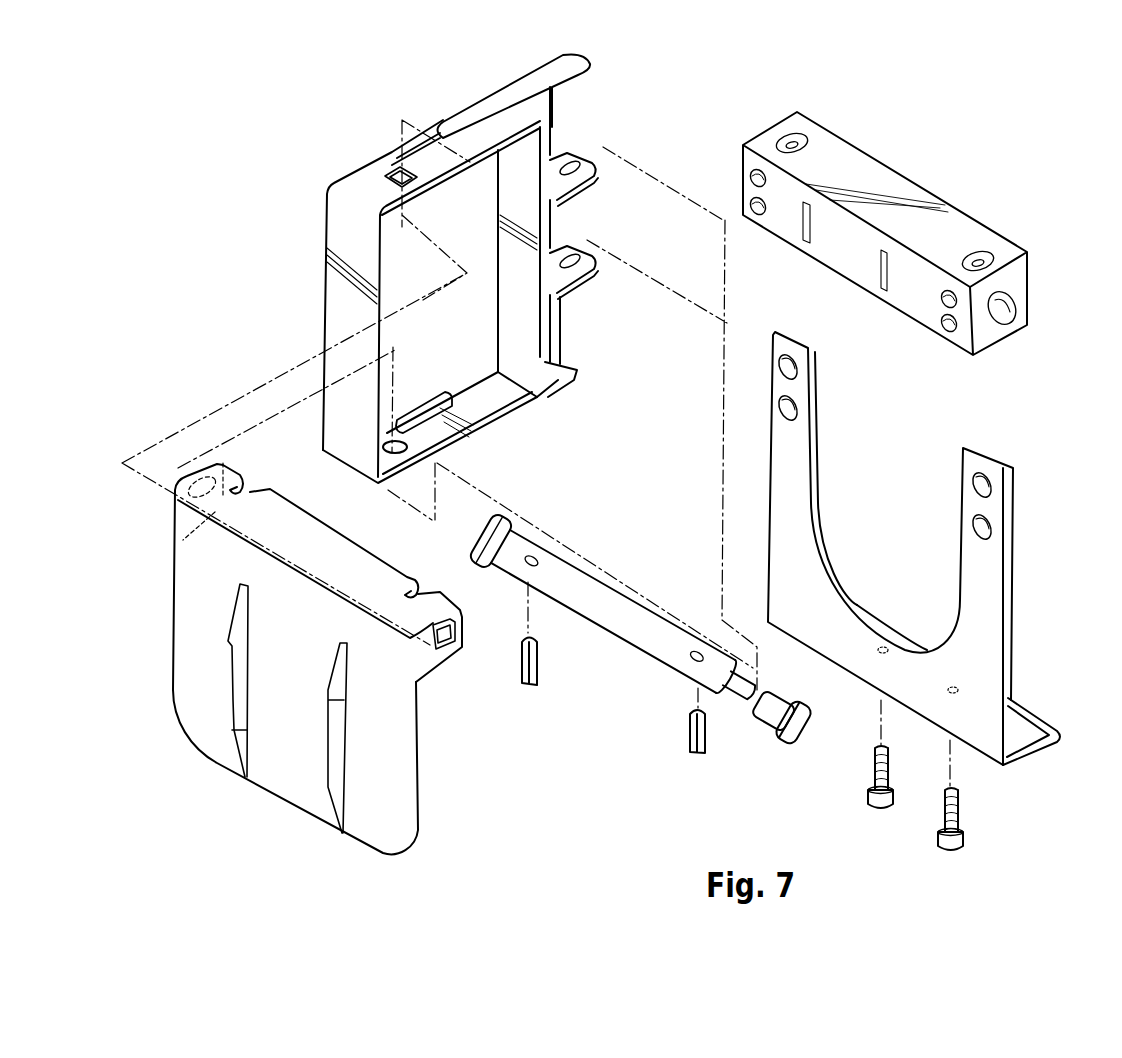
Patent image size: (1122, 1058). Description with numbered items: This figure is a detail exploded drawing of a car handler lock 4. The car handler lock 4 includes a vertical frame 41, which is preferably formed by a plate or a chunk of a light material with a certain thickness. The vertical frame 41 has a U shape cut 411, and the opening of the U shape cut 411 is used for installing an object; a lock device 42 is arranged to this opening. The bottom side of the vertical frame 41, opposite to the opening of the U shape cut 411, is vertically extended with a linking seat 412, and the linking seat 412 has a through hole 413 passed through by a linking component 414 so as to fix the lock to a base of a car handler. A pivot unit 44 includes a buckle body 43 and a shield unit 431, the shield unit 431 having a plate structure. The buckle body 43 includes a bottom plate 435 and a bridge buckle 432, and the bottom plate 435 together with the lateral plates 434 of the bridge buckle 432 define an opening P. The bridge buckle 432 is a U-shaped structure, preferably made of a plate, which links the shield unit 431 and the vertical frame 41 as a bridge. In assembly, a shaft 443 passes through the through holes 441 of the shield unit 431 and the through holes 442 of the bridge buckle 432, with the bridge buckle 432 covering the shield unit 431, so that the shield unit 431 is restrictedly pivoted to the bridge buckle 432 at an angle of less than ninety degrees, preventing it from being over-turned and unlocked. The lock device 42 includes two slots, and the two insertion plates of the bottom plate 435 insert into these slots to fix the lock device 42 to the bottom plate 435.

The car handler lock 4 is at (961, 140).
The vertical frame 41 is at (937, 548).
The U shape cut 411 is at (837, 583).
The linking seat 412 is at (1033, 725).
The through hole 413 is at (968, 688).
The linking component 414 is at (960, 800).
The lock device 42 is at (965, 229).
The buckle body 43 is at (358, 180).
The shield unit 431 is at (420, 767).
The bridge buckle 432 is at (438, 443).
The lateral plates 434 is at (568, 60).
The bottom plate 435 is at (552, 150).
The pivot unit 44 is at (273, 332).
The through holes 441 is at (447, 640).
The through holes 442 is at (405, 184).
The shaft 443 is at (625, 625).
The opening P is at (473, 363).